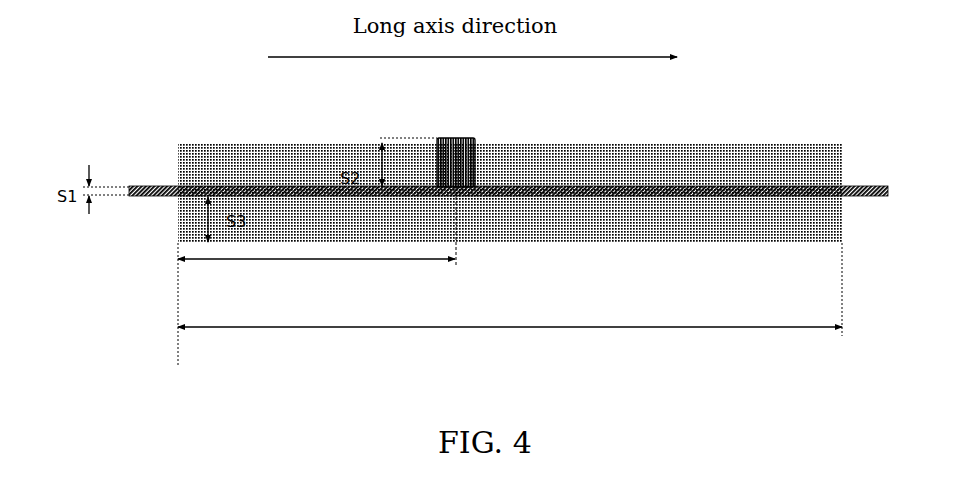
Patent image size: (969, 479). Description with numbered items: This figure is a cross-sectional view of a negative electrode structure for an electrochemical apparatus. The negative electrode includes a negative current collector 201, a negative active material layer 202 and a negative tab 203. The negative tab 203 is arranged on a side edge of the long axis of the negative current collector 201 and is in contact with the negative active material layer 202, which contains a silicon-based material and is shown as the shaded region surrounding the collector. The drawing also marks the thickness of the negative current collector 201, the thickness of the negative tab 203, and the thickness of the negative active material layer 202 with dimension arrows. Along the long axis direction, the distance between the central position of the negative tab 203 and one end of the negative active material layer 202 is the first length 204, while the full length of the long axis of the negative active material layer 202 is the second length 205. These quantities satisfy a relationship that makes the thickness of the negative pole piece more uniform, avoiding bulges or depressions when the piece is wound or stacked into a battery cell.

The negative current collector 201 is at (581, 192).
The negative active material layer 202 is at (720, 218).
The negative tab 203 is at (445, 151).
The first length 204 is at (316, 276).
The second length 205 is at (510, 345).